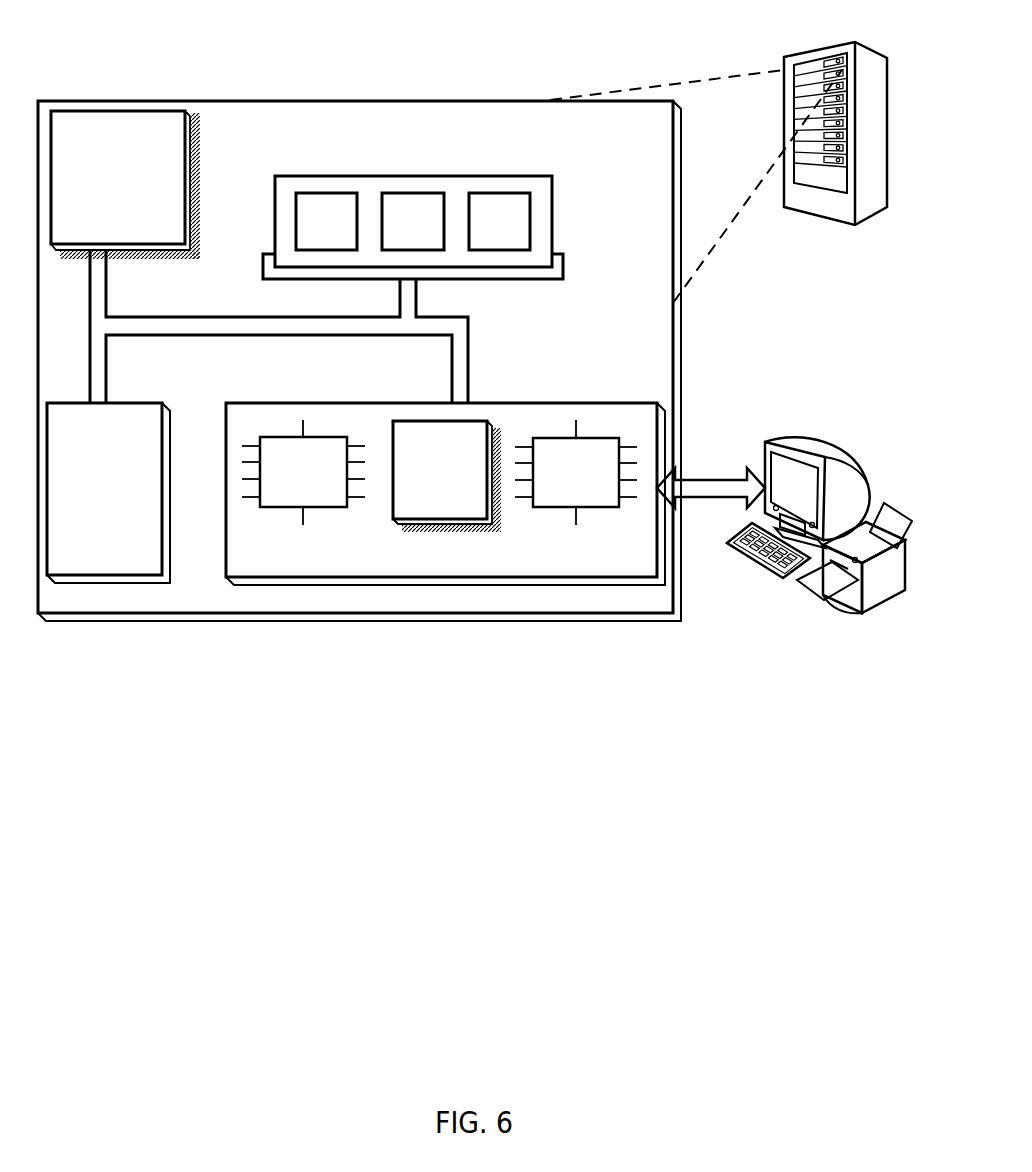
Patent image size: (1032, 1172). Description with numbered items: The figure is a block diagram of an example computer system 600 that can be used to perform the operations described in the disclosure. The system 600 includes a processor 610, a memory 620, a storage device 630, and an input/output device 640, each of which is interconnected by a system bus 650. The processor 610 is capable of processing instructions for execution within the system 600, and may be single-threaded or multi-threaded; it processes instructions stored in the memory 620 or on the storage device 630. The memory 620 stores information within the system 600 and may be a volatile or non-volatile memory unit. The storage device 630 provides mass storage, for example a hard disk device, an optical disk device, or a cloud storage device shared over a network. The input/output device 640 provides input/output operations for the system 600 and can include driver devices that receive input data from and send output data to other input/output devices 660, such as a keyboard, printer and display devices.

The computer system 600 is at (168, 82).
The processor 610 is at (176, 236).
The memory 620 is at (552, 222).
The storage device 630 is at (144, 567).
The input/output device 640 is at (621, 403).
The system bus 650 is at (277, 335).
The input/output devices 660 is at (766, 440).